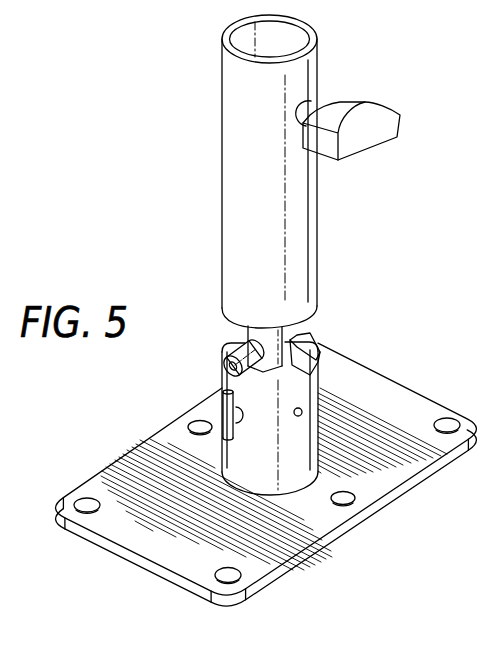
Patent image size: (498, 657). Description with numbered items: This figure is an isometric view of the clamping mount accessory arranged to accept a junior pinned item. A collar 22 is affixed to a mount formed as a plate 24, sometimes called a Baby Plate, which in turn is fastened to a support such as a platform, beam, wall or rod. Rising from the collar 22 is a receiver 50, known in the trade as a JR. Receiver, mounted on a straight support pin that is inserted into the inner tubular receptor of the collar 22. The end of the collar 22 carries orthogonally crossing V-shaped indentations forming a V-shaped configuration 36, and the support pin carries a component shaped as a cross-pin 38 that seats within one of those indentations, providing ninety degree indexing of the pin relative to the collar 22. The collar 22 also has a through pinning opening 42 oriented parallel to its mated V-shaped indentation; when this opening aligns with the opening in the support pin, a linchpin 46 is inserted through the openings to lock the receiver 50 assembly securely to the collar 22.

The collar 22 is at (220, 374).
The plate 24 is at (373, 383).
The V-shaped configuration 36 is at (299, 362).
The component shaped as a cross-pin 38 is at (236, 352).
The through pinning opening 42 is at (302, 413).
The linchpin 46 is at (226, 412).
The receiver 50 is at (298, 73).